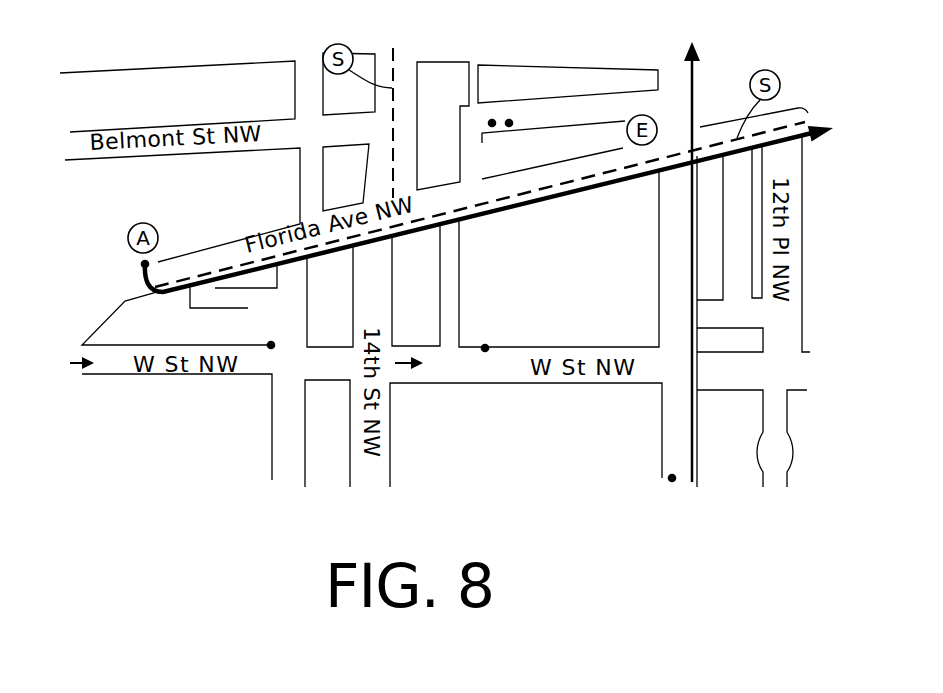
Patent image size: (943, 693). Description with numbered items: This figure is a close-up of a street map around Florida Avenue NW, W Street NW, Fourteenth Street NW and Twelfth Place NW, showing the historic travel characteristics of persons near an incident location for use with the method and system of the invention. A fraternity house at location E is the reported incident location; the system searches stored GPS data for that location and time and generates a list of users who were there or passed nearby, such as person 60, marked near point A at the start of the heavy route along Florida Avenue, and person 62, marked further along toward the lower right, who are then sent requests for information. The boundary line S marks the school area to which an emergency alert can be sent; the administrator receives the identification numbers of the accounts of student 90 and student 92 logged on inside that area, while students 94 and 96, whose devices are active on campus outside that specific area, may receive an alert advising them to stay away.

The person 60 is at (141, 266).
The person 62 is at (668, 482).
The student 90 is at (493, 123).
The student 92 is at (509, 124).
The student 94 is at (272, 345).
The student 96 is at (487, 348).